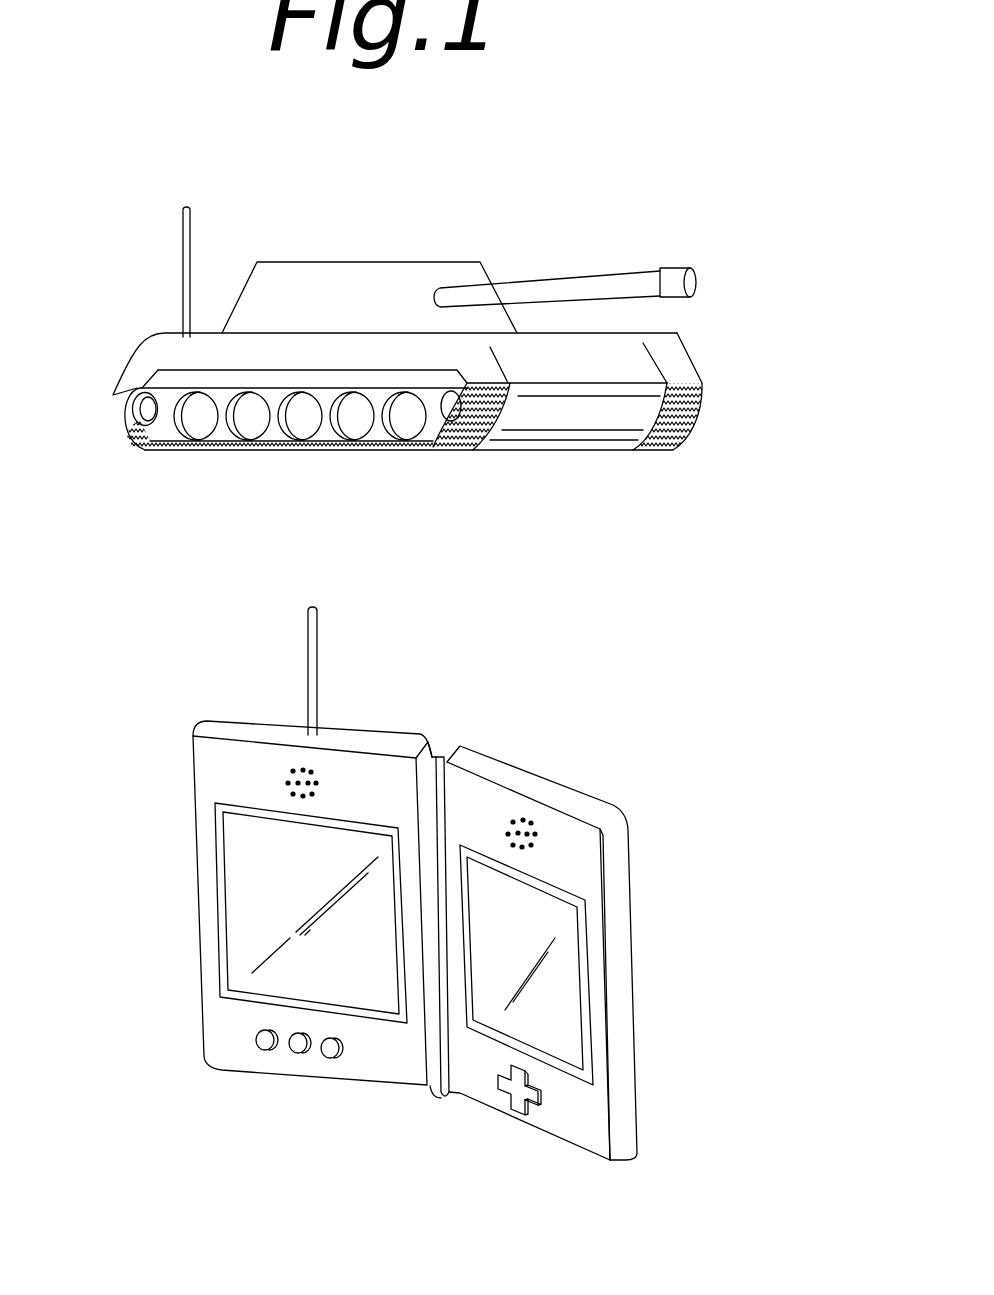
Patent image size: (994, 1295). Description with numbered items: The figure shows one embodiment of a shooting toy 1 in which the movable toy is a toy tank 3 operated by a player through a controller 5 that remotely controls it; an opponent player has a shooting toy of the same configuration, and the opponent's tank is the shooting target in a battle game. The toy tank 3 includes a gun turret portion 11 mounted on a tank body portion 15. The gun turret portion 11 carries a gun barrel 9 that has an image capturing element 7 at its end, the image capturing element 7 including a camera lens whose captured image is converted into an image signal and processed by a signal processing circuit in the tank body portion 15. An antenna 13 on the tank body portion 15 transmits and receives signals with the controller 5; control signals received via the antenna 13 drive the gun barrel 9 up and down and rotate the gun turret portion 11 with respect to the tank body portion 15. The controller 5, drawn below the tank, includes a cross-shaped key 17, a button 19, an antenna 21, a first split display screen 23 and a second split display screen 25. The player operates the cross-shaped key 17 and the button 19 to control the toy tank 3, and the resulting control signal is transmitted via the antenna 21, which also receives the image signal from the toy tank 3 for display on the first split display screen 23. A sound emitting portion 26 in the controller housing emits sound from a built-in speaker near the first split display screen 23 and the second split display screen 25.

The shooting toy 1 is at (758, 543).
The toy tank 3 is at (457, 227).
The controller 5 is at (653, 802).
The image capturing element 7 is at (680, 262).
The gun barrel 9 is at (568, 280).
The gun turret portion 11 is at (300, 262).
The antenna 13 is at (182, 235).
The tank body portion 15 is at (120, 370).
The cross-shaped key 17 is at (518, 1094).
The button 19 is at (268, 1050).
The antenna 21 is at (305, 645).
The first split display screen 23 is at (573, 988).
The second split display screen 25 is at (238, 894).
The sound emitting portion 26 is at (288, 781).